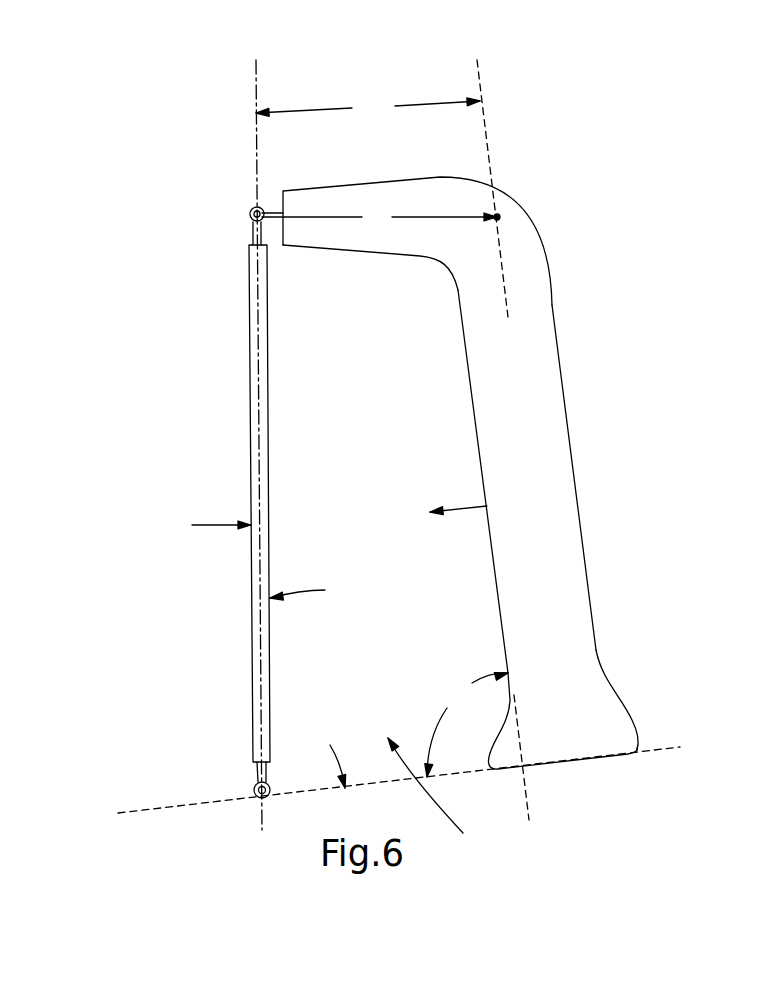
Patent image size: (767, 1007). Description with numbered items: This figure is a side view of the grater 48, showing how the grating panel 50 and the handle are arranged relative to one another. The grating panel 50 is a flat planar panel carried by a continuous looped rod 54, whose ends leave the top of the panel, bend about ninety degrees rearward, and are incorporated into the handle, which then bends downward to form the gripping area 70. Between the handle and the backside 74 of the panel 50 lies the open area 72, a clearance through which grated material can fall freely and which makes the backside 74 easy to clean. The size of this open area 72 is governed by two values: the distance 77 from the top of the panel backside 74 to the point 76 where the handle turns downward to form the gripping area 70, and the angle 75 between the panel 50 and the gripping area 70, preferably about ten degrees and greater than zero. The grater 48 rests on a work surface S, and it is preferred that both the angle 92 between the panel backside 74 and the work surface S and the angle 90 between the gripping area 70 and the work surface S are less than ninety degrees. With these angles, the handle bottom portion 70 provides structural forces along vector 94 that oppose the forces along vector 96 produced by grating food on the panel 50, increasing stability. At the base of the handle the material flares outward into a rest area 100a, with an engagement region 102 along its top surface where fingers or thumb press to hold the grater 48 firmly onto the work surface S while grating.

The grater 48 is at (582, 263).
The grating panel 50 is at (253, 432).
The continuous looped rod 54 is at (250, 240).
The gripping area 70 is at (533, 389).
The open area 72 is at (443, 792).
The backside of the panel 74 is at (311, 588).
The angle value 75 is at (368, 111).
The point where the handle turns downward 76 is at (500, 216).
The distance 77 is at (379, 215).
The angle 90 is at (466, 725).
The angle 92 is at (322, 753).
The vector 94 is at (466, 507).
The vector 96 is at (214, 523).
The rest area 100a is at (565, 746).
The engagement region 102 is at (563, 682).
The work surface S is at (187, 806).